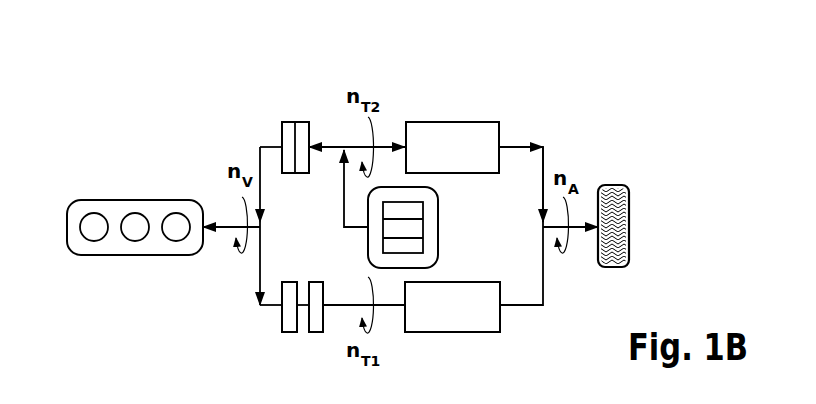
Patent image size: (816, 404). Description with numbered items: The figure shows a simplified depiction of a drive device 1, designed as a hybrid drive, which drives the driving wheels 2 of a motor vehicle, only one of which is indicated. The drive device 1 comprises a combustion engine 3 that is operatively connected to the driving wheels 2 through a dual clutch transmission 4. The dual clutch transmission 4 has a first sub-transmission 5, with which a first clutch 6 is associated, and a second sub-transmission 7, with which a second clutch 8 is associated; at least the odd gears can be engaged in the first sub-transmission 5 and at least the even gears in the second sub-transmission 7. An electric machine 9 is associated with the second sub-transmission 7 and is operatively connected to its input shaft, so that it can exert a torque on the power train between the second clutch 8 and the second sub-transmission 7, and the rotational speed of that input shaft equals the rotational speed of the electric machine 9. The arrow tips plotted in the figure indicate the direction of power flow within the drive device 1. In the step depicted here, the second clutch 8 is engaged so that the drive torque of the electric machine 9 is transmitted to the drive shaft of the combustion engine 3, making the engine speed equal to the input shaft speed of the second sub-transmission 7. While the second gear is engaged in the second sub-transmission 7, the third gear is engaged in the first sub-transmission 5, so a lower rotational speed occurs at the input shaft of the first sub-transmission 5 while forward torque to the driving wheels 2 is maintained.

The drive device 1 is at (575, 97).
The driving wheel 2 is at (612, 228).
The combustion engine 3 is at (137, 200).
The dual clutch transmission 4 is at (407, 92).
The first sub-transmission 5 is at (452, 282).
The first clutch 6 is at (290, 282).
The second sub-transmission 7 is at (453, 122).
The second clutch 8 is at (290, 122).
The electric machine 9 is at (438, 227).